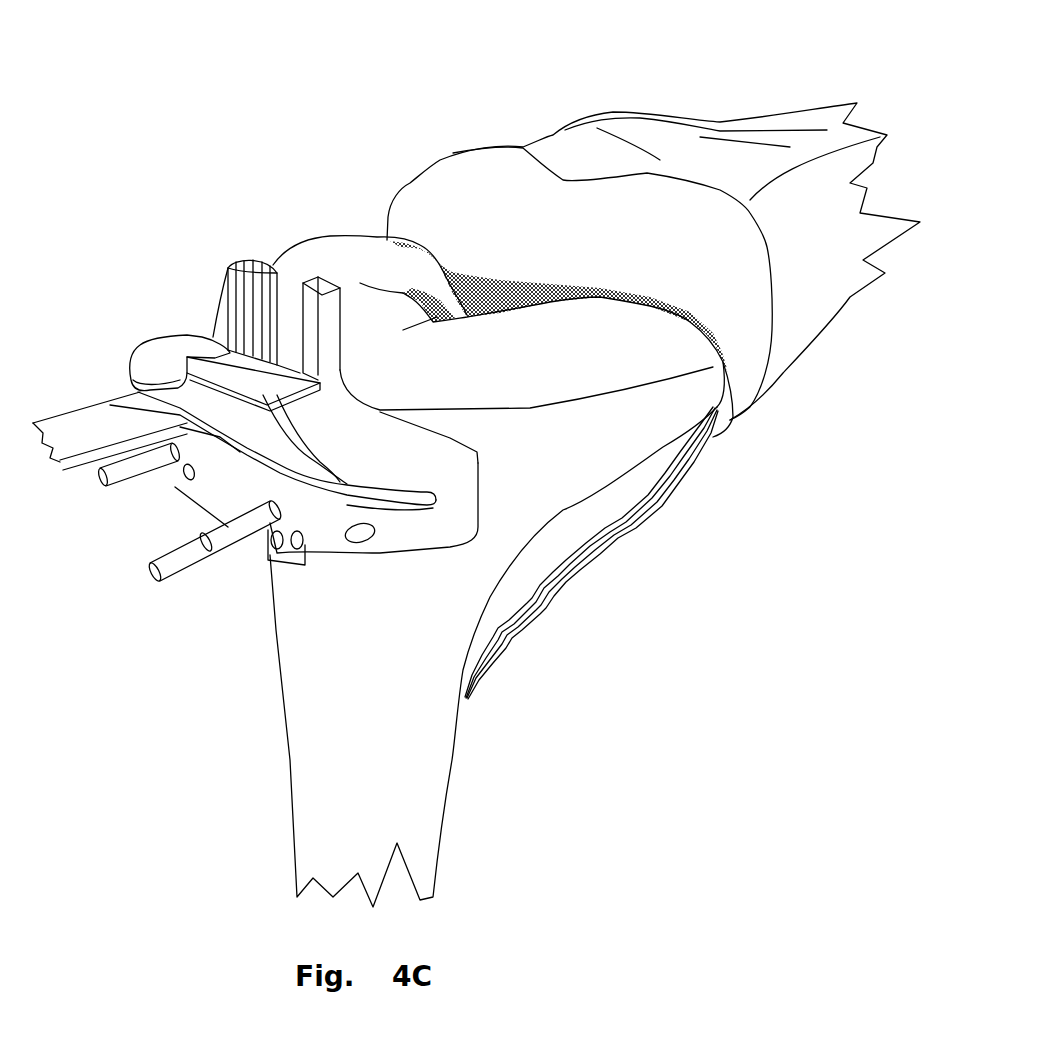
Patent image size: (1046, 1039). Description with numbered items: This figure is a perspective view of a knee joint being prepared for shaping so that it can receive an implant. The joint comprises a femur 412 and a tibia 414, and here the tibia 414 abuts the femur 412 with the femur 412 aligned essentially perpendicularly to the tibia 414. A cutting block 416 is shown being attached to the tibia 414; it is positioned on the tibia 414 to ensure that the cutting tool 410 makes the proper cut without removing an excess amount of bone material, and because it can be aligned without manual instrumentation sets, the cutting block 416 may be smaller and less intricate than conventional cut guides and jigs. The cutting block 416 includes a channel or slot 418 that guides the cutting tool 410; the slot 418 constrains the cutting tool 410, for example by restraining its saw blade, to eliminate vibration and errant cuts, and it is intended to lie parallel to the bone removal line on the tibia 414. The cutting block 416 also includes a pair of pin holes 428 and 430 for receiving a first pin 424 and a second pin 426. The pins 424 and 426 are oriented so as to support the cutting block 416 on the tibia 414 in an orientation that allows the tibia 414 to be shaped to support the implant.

The cutting tool 410 is at (97, 427).
The femur 412 is at (441, 157).
The tibia 414 is at (580, 533).
The cutting block 416 is at (162, 345).
The slot 418 is at (428, 486).
The first pin 424 is at (107, 478).
The second pin 426 is at (180, 574).
The pin hole 428 is at (172, 462).
The pin hole 430 is at (287, 523).